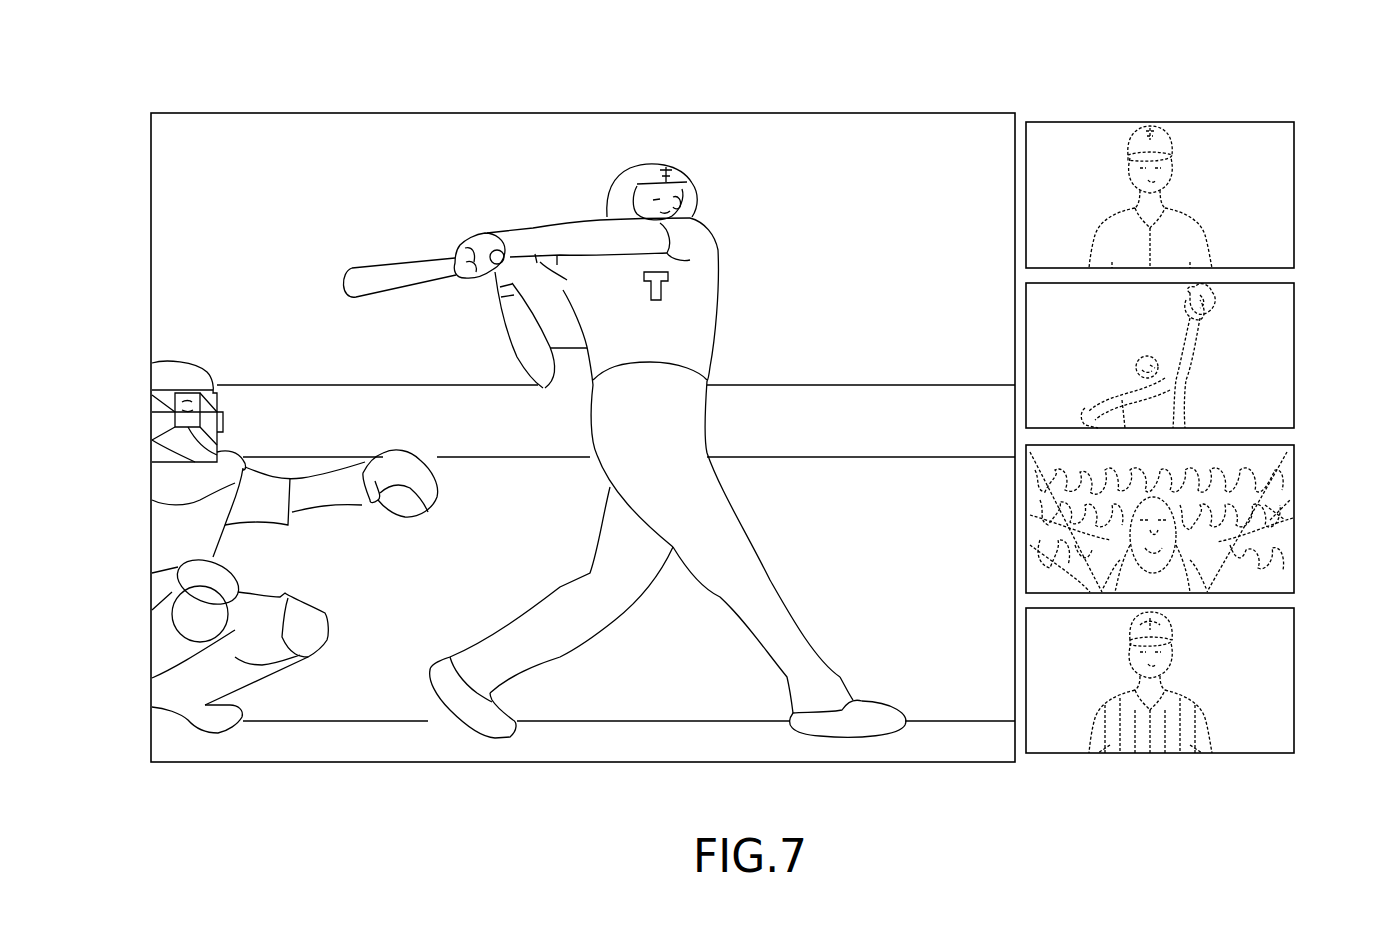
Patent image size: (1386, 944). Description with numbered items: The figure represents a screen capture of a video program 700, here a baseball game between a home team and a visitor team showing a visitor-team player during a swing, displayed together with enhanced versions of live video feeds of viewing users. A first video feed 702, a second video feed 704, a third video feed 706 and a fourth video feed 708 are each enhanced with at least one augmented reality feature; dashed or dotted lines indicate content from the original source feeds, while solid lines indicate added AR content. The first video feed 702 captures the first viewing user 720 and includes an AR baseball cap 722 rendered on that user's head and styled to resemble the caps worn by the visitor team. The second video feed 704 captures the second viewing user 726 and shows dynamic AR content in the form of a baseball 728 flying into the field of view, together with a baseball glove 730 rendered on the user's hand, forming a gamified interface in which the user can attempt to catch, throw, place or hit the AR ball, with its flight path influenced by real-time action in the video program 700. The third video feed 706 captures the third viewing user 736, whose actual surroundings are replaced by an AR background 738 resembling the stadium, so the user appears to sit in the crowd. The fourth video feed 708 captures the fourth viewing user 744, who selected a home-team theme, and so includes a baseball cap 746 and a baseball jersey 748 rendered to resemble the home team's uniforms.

The video program 700 is at (432, 112).
The first video feed 702 is at (1294, 187).
The second video feed 704 is at (1294, 289).
The third video feed 706 is at (1294, 455).
The fourth video feed 708 is at (1294, 625).
The first viewing user 720 is at (1195, 213).
The baseball cap 722 is at (1163, 132).
The second viewing user 726 is at (1178, 398).
The baseball 728 is at (1190, 322).
The baseball glove 730 is at (1202, 305).
The third viewing user 736 is at (1290, 497).
The background 738 is at (1287, 557).
The fourth viewing user 744 is at (1128, 666).
The baseball cap 746 is at (1170, 635).
The baseball jersey 748 is at (1213, 721).